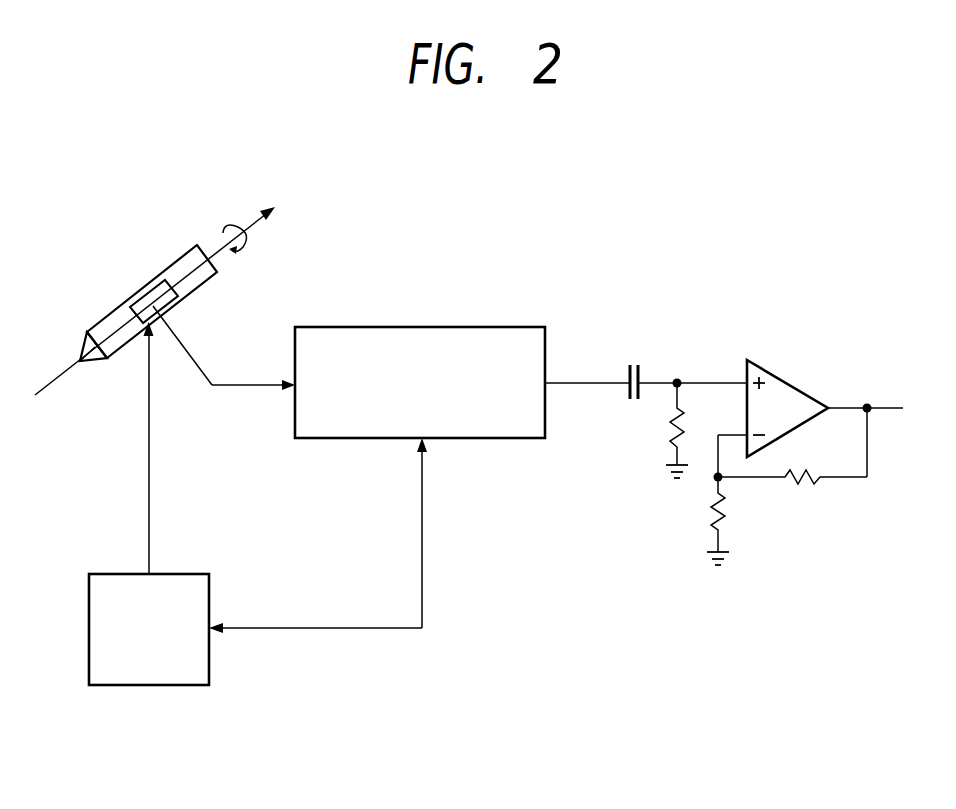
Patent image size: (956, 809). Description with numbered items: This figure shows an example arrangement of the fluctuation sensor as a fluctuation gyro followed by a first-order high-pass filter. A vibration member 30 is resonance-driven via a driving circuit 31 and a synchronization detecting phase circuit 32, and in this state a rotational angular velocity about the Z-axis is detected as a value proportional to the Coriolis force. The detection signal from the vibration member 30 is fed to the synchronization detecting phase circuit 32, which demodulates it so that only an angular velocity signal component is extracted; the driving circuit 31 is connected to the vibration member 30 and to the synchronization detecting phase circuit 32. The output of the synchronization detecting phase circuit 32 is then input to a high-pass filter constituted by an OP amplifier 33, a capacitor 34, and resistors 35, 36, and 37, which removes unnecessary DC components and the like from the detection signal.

The vibration member 30 is at (185, 298).
The driving circuit 31 is at (188, 687).
The synchronization detecting phase circuit 32 is at (492, 325).
The OP amplifier 33 is at (797, 387).
The capacitor 34 is at (637, 362).
The resistor 35 is at (670, 437).
The resistor 36 is at (708, 521).
The resistor 37 is at (812, 485).